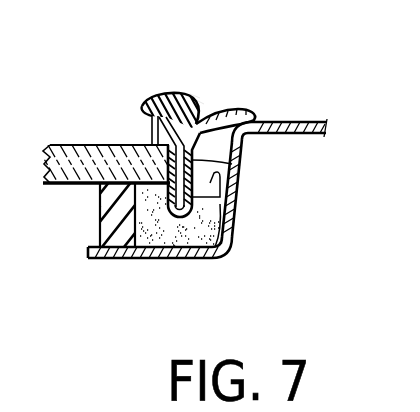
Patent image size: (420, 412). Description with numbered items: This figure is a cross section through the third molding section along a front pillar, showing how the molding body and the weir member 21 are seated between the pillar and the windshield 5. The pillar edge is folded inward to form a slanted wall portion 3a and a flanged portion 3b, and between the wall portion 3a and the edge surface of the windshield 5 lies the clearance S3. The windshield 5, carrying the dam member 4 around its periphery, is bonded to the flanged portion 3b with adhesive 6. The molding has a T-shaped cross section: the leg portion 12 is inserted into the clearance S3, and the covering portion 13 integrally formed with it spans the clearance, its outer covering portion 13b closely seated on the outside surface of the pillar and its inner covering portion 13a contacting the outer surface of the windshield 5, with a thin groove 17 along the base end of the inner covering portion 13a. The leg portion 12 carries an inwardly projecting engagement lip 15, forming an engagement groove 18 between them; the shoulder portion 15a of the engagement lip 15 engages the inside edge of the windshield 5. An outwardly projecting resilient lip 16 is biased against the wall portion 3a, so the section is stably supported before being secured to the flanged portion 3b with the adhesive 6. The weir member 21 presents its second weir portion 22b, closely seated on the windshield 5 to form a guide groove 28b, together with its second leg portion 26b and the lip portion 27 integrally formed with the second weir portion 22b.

The slanted wall portion 3a is at (234, 217).
The flanged portion 3b is at (140, 259).
The dam member 4 is at (116, 249).
The windshield 5 is at (72, 153).
The adhesive 6 is at (174, 242).
The leg portion 12 is at (172, 213).
The covering portion 13 is at (207, 107).
The inner covering portion 13a is at (150, 104).
The outer covering portion 13b is at (247, 112).
The engagement lip 15 is at (155, 202).
The shoulder portion 15a is at (165, 189).
The resilient lip 16 is at (233, 198).
The thin groove 17 is at (244, 148).
The engagement groove 18 is at (190, 230).
The weir member 21 is at (168, 147).
The second weir portion 22b is at (196, 99).
The second leg portion 26b is at (236, 172).
The lip portion 27 is at (217, 116).
The guide groove 28b is at (149, 136).
The clearance S3 is at (229, 244).